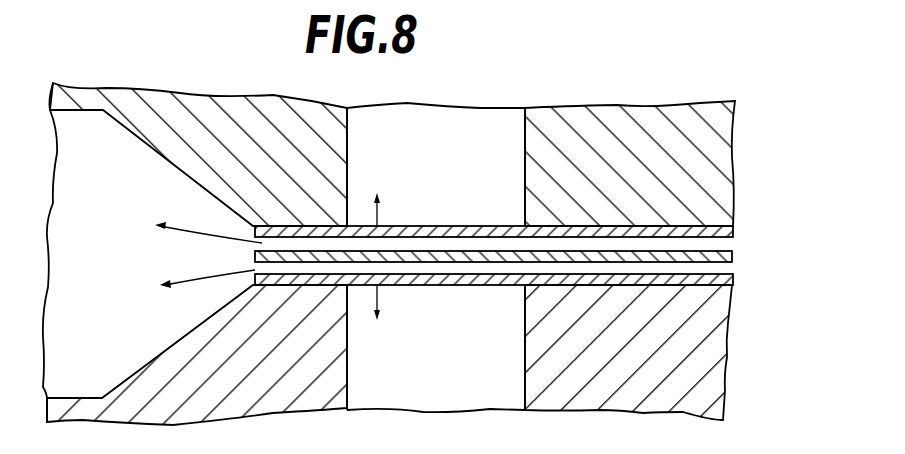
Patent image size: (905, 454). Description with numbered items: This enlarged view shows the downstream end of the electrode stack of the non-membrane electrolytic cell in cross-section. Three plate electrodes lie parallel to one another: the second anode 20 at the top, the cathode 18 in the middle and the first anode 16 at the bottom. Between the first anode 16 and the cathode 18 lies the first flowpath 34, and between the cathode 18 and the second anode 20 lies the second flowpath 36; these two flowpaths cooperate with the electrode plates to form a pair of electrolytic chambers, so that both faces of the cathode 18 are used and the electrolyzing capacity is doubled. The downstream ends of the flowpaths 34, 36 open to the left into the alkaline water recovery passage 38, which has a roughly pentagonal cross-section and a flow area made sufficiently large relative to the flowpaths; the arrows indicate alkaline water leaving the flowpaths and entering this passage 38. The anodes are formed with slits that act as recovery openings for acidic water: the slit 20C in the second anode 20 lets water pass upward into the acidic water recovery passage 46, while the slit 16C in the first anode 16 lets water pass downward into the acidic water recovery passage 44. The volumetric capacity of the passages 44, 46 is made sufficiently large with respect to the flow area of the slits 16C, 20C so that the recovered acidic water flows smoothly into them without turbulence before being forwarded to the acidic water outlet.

The second anode 20 is at (733, 224).
The first anode 16 is at (733, 286).
The cathode 18 is at (729, 256).
The second flowpath 36 is at (723, 247).
The first flowpath 34 is at (722, 271).
The recovery passage for acidic water 46 is at (460, 176).
The recovery passage for acidic water 44 is at (467, 355).
The alkaline water recovery passage 38 is at (107, 277).
The slit 20C is at (437, 246).
The slit 16C is at (437, 268).